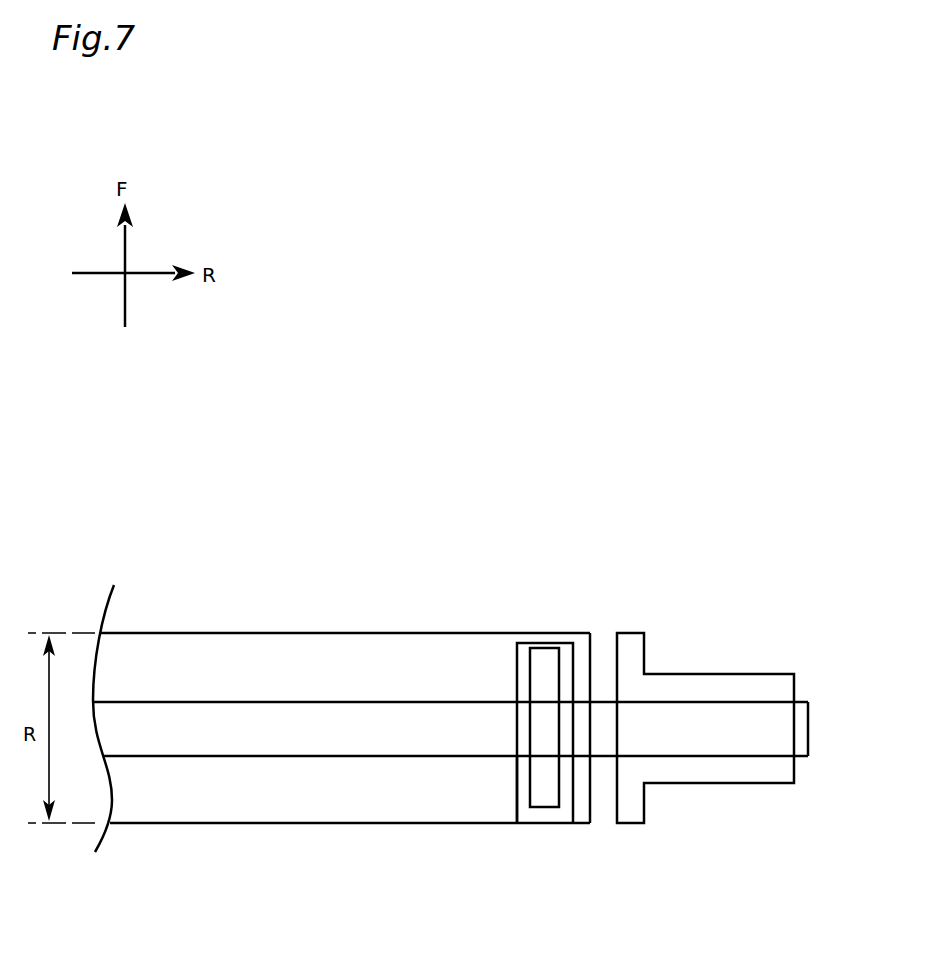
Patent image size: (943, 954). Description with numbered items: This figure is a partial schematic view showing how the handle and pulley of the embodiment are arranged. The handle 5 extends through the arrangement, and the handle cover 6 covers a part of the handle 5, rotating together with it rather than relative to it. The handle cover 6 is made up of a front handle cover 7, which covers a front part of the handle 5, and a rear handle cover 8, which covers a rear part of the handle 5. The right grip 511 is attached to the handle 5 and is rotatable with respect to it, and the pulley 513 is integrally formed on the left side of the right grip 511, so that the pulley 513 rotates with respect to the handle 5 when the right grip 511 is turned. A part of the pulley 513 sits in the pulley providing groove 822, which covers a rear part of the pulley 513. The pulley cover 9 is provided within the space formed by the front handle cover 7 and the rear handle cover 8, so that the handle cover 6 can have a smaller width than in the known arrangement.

The handle 5 is at (393, 722).
The handle cover 6 is at (229, 823).
The front handle cover 7 is at (280, 633).
The rear handle cover 8 is at (362, 823).
The pulley cover 9 is at (516, 664).
The right grip 511 is at (757, 772).
The pulley 513 is at (548, 793).
The pulley providing groove 822 is at (513, 805).